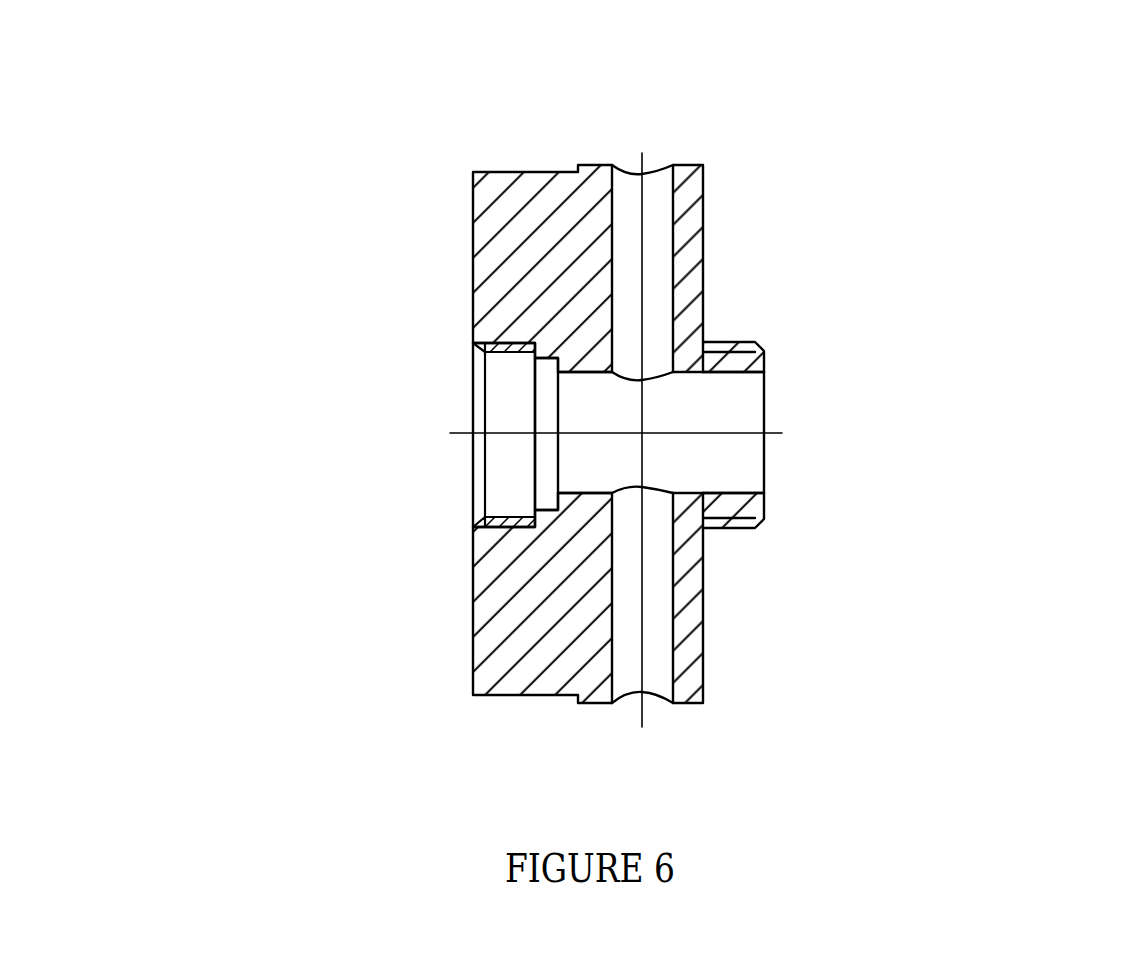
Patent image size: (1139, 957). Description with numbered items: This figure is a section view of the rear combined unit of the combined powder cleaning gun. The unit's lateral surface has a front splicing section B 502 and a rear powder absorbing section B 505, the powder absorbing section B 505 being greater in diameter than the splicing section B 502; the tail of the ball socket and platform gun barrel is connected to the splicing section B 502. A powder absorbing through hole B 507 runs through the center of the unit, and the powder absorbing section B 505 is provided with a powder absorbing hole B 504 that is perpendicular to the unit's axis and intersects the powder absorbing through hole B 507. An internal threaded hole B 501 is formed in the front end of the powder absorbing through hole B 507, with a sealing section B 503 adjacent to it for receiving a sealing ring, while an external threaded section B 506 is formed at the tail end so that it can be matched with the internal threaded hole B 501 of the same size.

The internal threaded hole B 501 is at (340, 282).
The splicing section B 502 is at (487, 370).
The sealing section B 503 is at (507, 273).
The powder absorbing hole B 504 is at (608, 370).
The powder absorbing section B 505 is at (674, 370).
The external threaded section B 506 is at (806, 282).
The powder absorbing through hole B 507 is at (824, 265).